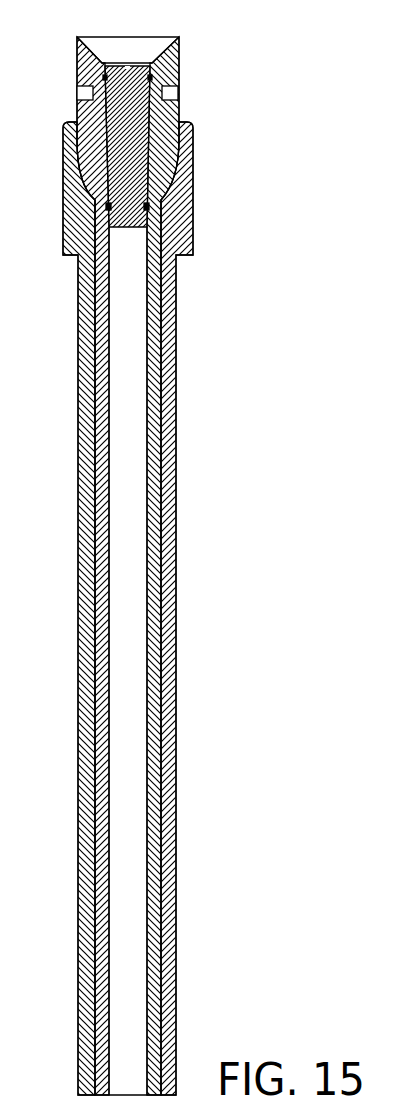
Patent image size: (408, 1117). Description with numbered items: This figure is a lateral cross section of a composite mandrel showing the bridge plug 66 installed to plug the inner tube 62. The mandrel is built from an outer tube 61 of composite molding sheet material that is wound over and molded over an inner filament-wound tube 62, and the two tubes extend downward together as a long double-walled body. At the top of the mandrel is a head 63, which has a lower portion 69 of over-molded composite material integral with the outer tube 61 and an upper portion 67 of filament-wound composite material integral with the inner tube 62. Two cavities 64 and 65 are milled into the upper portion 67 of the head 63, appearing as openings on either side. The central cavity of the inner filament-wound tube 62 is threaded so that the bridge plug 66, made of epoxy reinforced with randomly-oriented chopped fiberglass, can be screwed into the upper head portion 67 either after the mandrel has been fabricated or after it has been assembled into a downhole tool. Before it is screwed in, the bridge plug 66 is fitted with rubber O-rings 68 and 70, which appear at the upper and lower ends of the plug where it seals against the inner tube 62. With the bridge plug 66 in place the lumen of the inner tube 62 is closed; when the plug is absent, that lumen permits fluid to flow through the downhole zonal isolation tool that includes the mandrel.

The outer tube 61 is at (172, 425).
The inner filament-wound tube 62 is at (155, 477).
The head 63 is at (151, 561).
The cavity 64 is at (77, 96).
The cavity 65 is at (178, 95).
The bridge plug 66 is at (140, 118).
The upper portion 67 is at (180, 54).
The rubber O-ring 68 is at (152, 77).
The lower portion 69 is at (194, 186).
The rubber O-ring 70 is at (149, 207).